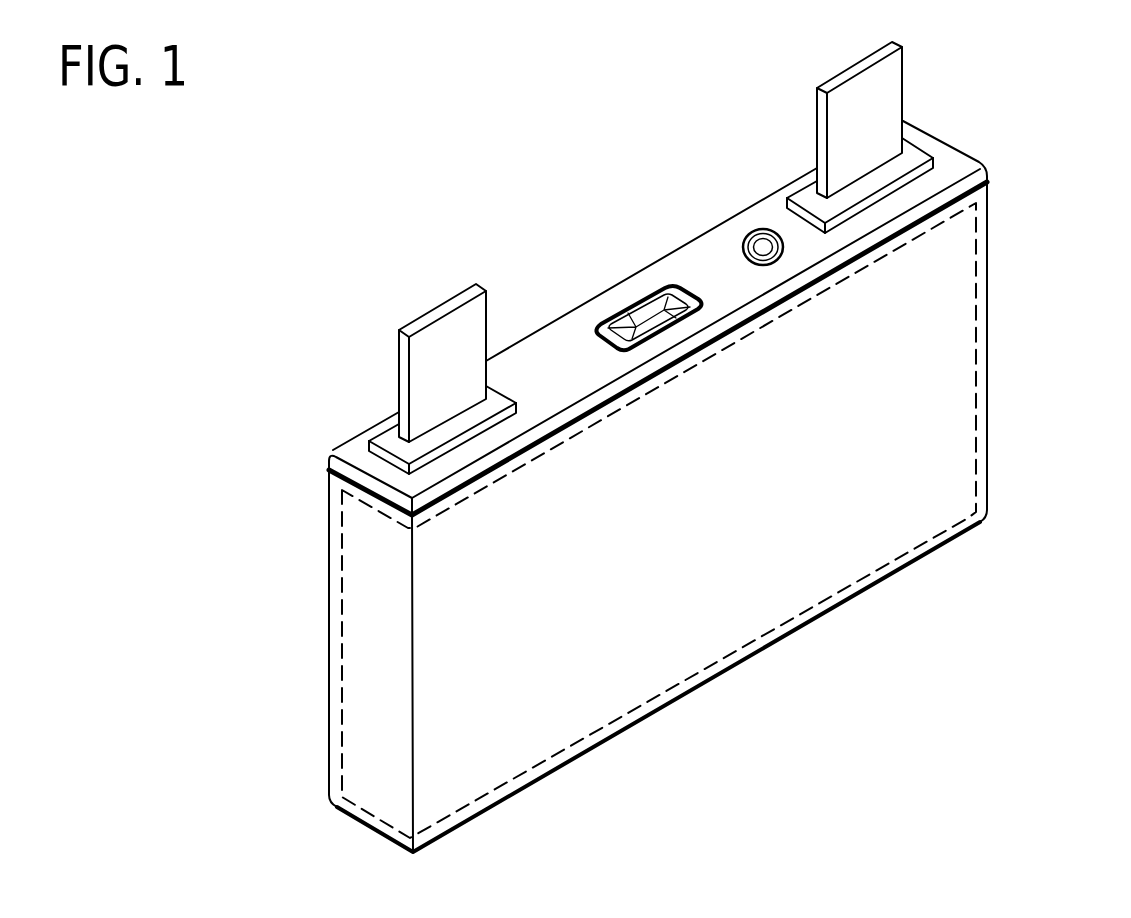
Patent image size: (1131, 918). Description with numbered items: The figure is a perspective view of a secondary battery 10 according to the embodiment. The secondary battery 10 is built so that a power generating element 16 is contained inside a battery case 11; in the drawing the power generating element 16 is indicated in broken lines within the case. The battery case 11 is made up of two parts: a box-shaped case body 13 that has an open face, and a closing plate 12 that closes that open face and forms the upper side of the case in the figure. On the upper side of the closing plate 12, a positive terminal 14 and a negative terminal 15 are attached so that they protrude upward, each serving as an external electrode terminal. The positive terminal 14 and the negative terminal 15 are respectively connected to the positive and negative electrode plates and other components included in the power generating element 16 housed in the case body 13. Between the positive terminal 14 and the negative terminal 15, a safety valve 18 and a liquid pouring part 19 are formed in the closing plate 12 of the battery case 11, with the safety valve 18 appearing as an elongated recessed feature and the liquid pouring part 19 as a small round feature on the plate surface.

The secondary battery 10 is at (335, 203).
The battery case 11 is at (1055, 135).
The closing plate 12 is at (962, 146).
The case body 13 is at (988, 252).
The positive terminal 14 is at (843, 125).
The negative terminal 15 is at (427, 368).
The power generating element 16 is at (595, 733).
The safety valve 18 is at (622, 322).
The liquid pouring part 19 is at (744, 236).